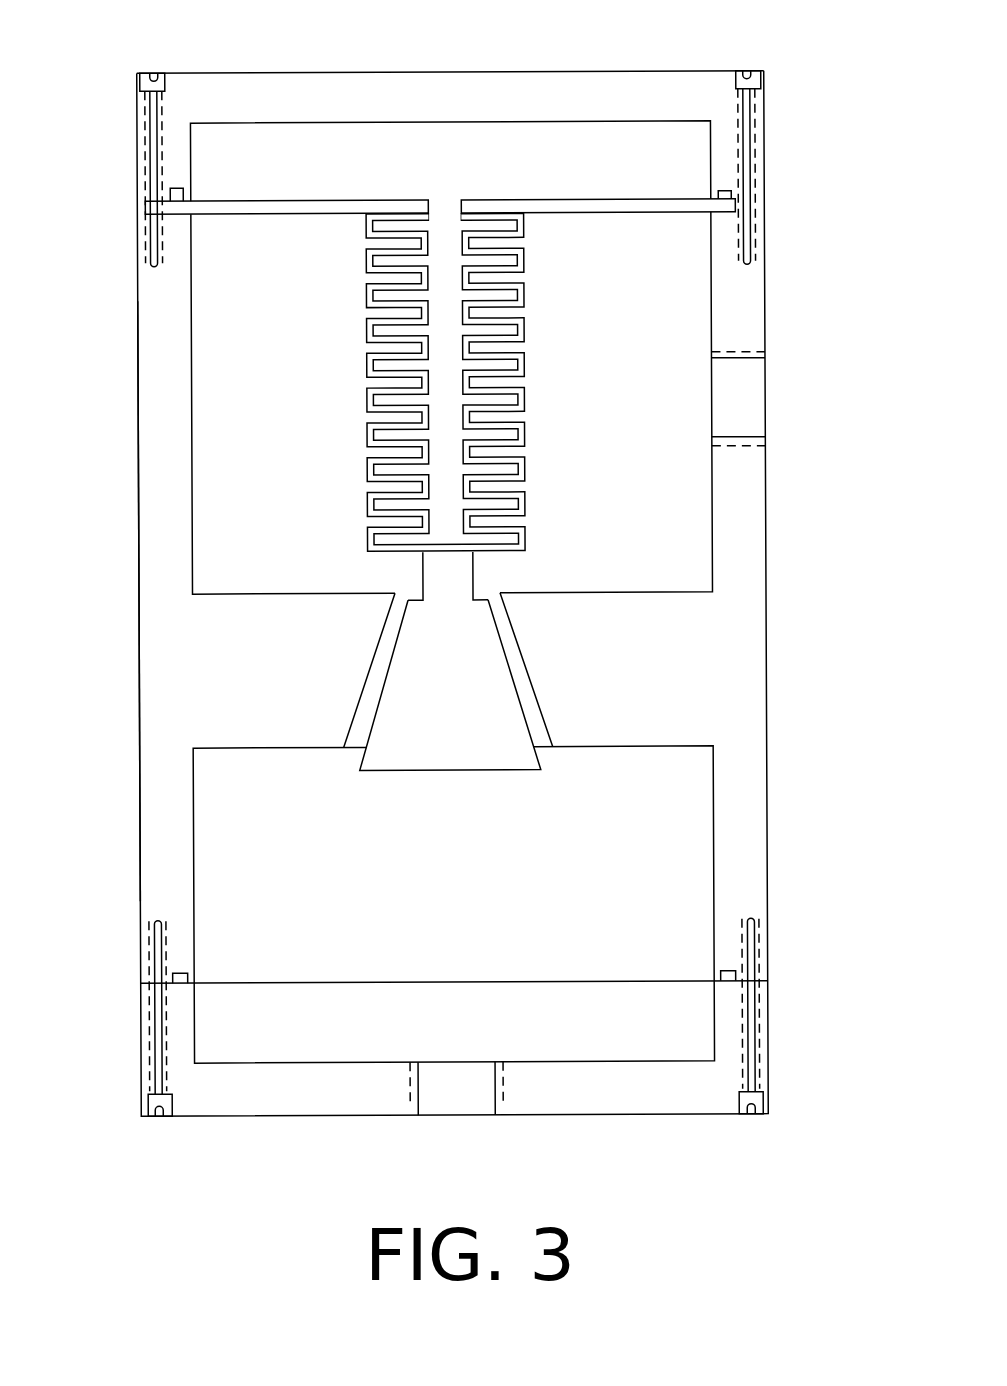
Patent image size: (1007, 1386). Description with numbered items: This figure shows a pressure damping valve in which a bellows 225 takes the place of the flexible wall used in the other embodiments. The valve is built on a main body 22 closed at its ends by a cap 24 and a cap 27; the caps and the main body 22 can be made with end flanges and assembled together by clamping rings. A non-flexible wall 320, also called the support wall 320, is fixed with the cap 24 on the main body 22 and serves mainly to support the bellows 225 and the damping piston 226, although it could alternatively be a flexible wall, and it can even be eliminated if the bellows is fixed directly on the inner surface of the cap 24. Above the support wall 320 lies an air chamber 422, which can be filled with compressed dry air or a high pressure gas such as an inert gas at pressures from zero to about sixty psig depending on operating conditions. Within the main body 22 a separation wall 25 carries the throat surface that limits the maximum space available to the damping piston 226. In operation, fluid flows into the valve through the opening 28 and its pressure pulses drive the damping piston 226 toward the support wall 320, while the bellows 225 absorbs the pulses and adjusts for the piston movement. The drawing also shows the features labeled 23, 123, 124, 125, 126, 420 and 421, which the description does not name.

The main body 22 is at (740, 680).
The stopper 23 is at (748, 407).
The cap 24 is at (560, 85).
The separation wall 25 is at (292, 676).
The cap 27 is at (322, 1097).
The opening 28 is at (453, 1095).
The fixing block 123 is at (722, 200).
The upper right anchor 124 is at (758, 90).
The upper left anchor 125 is at (163, 80).
The fixing block 126 is at (173, 192).
The bellows 225 is at (369, 390).
The damping piston 226 is at (380, 760).
The non-flexible wall 320 is at (620, 215).
The lower mass 420 is at (680, 852).
The lower portion of upper mass 421 is at (685, 513).
The air chamber 422 is at (645, 145).